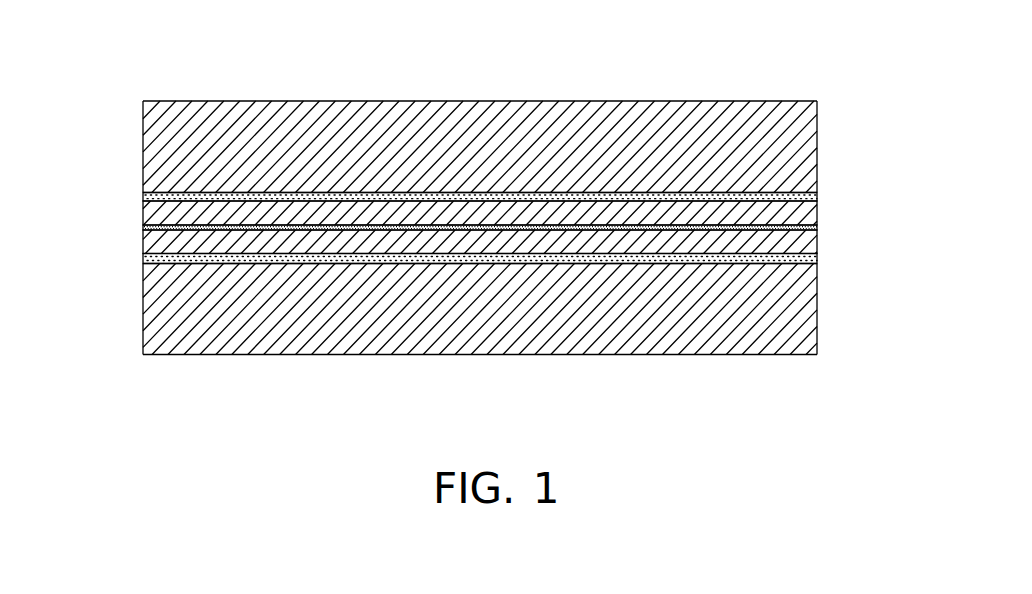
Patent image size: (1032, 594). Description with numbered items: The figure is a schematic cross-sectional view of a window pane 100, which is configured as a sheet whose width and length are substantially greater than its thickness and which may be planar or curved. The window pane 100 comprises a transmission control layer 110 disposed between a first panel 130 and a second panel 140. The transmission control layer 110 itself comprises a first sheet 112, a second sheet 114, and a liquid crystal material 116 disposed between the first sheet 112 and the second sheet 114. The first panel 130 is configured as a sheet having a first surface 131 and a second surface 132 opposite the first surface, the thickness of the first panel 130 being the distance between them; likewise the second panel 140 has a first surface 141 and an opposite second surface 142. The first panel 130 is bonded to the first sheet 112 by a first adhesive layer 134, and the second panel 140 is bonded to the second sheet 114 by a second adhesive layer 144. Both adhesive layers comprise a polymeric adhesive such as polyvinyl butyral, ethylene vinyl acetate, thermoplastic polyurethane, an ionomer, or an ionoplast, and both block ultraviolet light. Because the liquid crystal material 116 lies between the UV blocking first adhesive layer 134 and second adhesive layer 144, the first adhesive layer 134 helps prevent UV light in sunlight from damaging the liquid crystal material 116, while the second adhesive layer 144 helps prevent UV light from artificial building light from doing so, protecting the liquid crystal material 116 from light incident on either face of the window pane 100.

The window pane 100 is at (477, 203).
The transmission control layer 110 is at (485, 222).
The first sheet 112 is at (521, 202).
The second sheet 114 is at (519, 247).
The liquid crystal material 116 is at (518, 222).
The first panel 130 is at (535, 116).
The first surface 131 is at (480, 70).
The second surface 132 is at (417, 210).
The first adhesive layer 134 is at (535, 166).
The second panel 140 is at (539, 331).
The first surface 141 is at (420, 249).
The second surface 142 is at (480, 377).
The second adhesive layer 144 is at (539, 280).